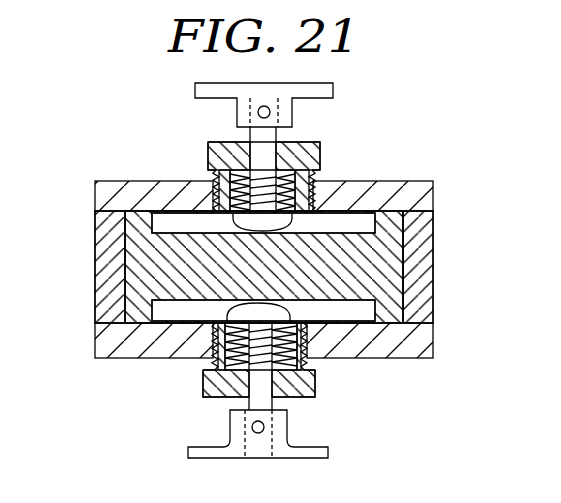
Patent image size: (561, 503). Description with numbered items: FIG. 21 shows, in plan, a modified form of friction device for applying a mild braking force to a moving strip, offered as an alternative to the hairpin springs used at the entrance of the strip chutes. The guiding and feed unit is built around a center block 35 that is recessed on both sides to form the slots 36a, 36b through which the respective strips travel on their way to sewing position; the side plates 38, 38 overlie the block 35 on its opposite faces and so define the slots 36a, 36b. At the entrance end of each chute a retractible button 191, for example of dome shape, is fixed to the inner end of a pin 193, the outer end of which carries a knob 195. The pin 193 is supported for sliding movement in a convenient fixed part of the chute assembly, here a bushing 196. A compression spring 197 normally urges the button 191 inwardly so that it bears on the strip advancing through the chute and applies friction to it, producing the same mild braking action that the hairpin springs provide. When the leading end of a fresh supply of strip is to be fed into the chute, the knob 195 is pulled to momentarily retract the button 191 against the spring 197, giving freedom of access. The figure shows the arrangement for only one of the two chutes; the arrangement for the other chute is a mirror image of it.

The side plate 38 is at (124, 181).
The center block 35 is at (163, 258).
The slot 36a is at (168, 218).
The slot 36b is at (229, 359).
The retractible button 191 is at (272, 315).
The pin 193 is at (250, 407).
The knob 195 is at (288, 425).
The bushing 196 is at (317, 382).
The compression spring 197 is at (183, 313).